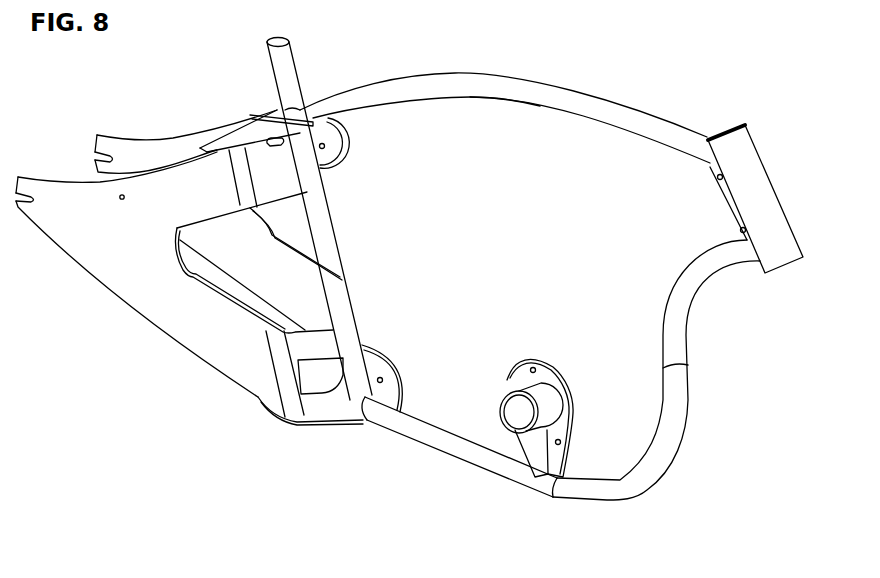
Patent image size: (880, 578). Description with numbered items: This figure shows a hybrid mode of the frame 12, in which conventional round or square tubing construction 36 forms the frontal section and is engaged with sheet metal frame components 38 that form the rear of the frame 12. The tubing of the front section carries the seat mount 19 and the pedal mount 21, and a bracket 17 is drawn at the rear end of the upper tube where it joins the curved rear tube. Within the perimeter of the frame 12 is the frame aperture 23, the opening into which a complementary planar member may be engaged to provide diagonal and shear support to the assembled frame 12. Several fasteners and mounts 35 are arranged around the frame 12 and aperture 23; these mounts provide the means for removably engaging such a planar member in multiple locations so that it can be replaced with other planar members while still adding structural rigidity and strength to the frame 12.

The frame 12 is at (580, 90).
The mounting bracket 17 is at (762, 178).
The seat mount 19 is at (292, 42).
The pedal mount 21 is at (513, 428).
The frame aperture 23 is at (603, 288).
The fasteners and mounts 35 is at (335, 160).
The conventional tubing construction 36 is at (545, 110).
The sheet metal frame components 38 is at (102, 288).